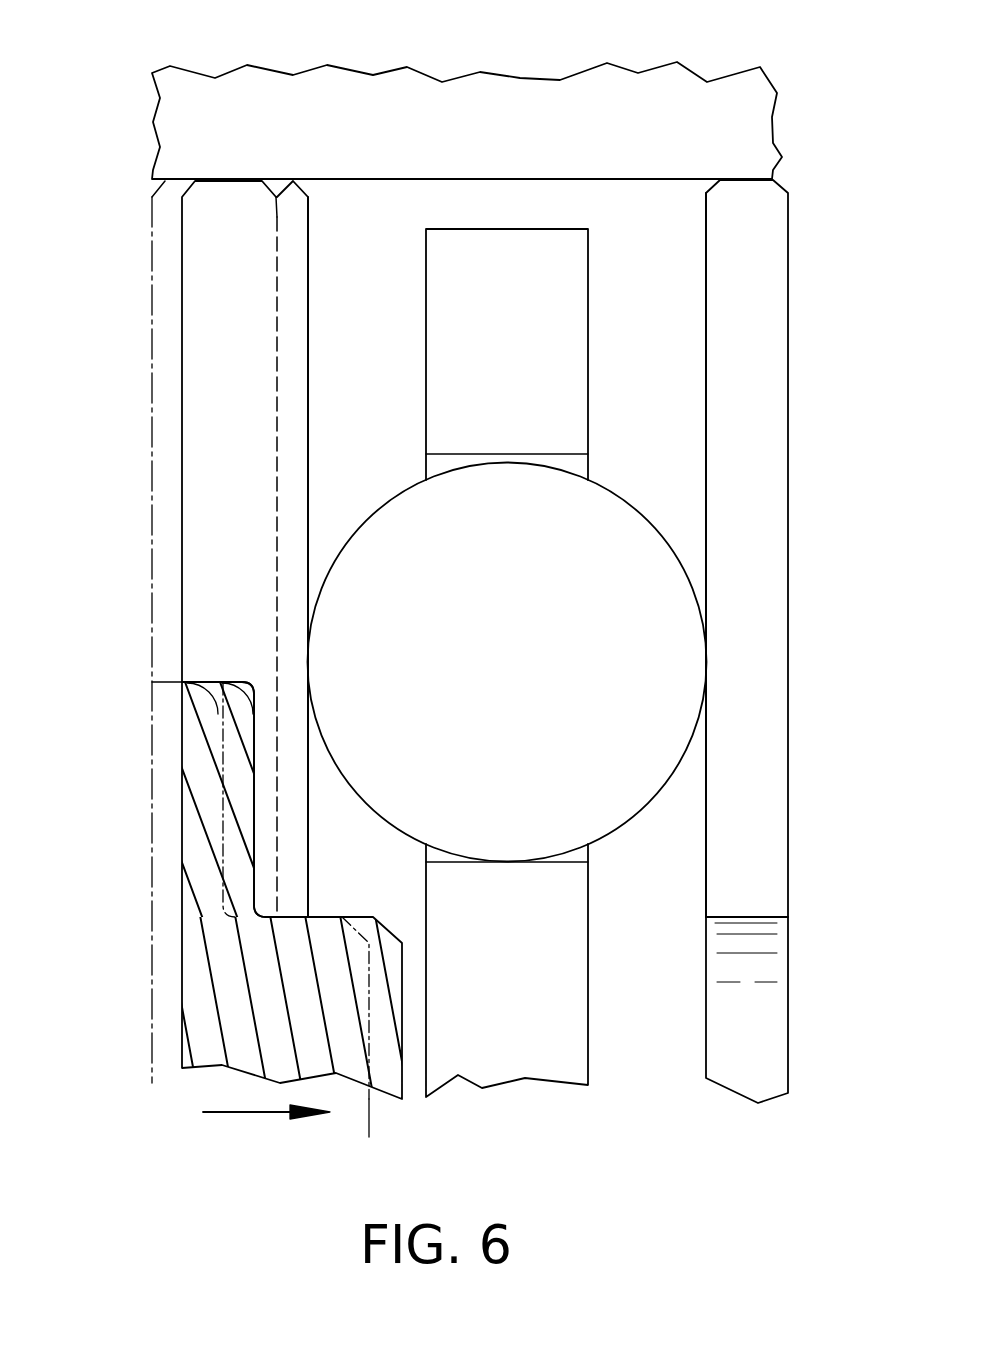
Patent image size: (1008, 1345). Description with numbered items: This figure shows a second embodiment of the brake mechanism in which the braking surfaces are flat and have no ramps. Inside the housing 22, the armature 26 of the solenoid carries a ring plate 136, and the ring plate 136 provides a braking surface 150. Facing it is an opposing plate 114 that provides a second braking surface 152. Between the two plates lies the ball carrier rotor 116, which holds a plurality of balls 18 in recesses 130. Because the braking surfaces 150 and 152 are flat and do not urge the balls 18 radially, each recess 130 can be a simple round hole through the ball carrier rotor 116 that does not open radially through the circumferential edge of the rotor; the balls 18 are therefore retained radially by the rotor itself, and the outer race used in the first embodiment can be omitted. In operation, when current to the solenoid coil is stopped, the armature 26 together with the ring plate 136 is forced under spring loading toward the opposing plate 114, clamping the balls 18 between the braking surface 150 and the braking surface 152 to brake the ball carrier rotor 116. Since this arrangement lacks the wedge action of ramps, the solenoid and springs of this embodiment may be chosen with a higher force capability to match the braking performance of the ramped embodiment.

The housing 22 is at (498, 118).
The ring plate 136 is at (198, 518).
The braking surface 150 is at (307, 375).
The braking surface 152 is at (706, 377).
The opposing plate 114 is at (767, 438).
The recess 130 is at (578, 471).
The ball 18 is at (640, 592).
The ball carrier rotor 116 is at (525, 1063).
The armature 26 is at (206, 966).